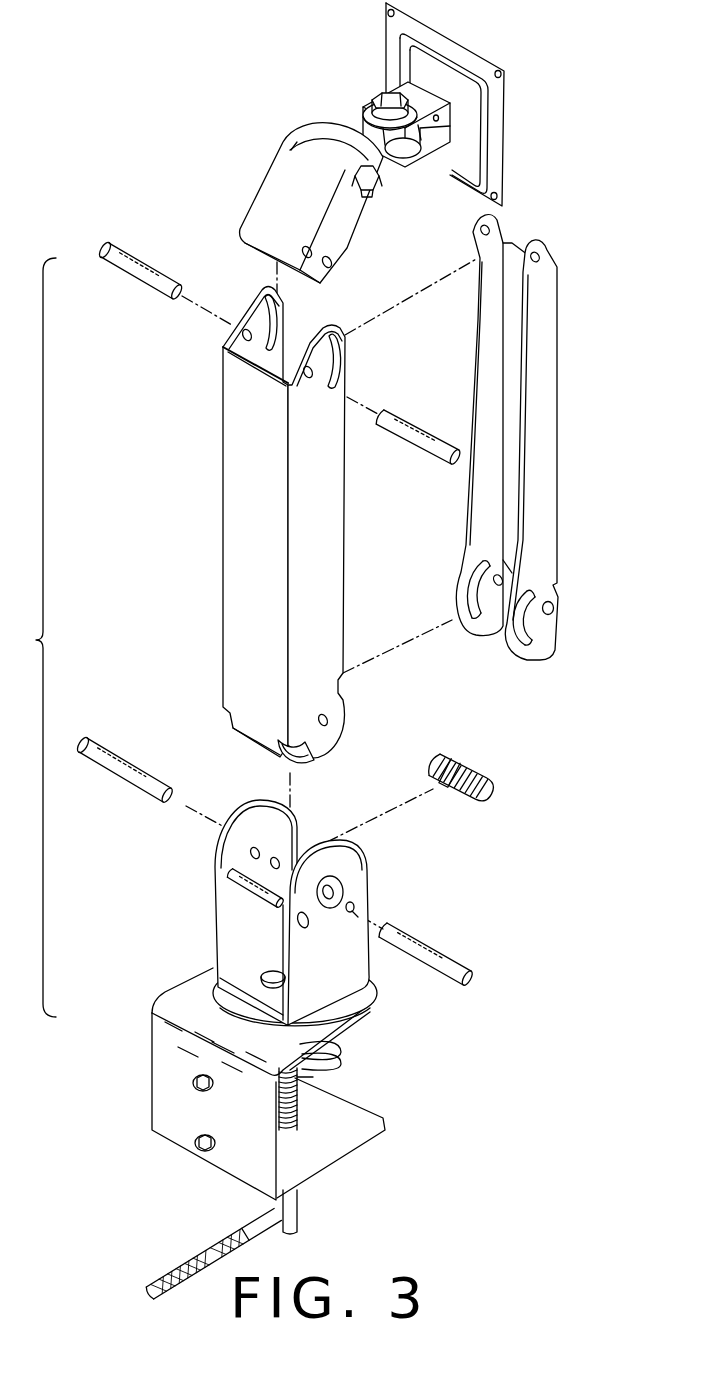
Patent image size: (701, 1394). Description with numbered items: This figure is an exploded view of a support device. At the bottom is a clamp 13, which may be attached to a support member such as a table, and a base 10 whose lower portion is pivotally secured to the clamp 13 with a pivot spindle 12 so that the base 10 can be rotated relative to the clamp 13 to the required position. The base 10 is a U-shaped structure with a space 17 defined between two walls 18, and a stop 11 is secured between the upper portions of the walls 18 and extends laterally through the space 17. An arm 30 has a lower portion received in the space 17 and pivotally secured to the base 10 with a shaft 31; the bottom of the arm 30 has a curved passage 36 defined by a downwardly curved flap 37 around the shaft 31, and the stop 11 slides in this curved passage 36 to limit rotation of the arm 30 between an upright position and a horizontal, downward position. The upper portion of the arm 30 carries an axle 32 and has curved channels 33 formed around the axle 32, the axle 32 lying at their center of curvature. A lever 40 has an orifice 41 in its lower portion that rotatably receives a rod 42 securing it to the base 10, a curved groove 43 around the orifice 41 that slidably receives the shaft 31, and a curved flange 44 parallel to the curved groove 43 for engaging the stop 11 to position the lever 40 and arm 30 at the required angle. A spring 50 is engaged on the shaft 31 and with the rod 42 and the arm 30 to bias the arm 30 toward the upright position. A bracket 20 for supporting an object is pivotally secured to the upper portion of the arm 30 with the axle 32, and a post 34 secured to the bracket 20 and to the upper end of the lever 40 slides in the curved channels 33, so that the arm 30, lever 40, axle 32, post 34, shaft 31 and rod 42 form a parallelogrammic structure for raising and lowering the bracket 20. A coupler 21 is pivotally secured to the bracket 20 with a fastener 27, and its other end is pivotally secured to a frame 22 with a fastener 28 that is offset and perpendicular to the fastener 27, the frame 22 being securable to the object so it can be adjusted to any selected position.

The base 10 is at (320, 972).
The stop 11 is at (253, 900).
The pivot spindle 12 is at (273, 975).
The clamp 13 is at (167, 1082).
The space 17 is at (310, 840).
The walls 18 is at (360, 877).
The bracket 20 is at (278, 185).
The coupler 21 is at (347, 128).
The frame 22 is at (463, 45).
The fastener 27 is at (373, 196).
The fastener 28 is at (378, 95).
The arm 30 is at (230, 503).
The shaft 31 is at (128, 785).
The axle 32 is at (148, 280).
The curved channels 33 is at (273, 310).
The post 34 is at (423, 445).
The curved passage 36 is at (335, 756).
The downwardly curved flap 37 is at (280, 753).
The lever 40 is at (522, 400).
The orifice 41 is at (554, 608).
The rod 42 is at (432, 947).
The curved groove 43 is at (476, 616).
The flange 44 is at (470, 595).
The spring 50 is at (463, 757).